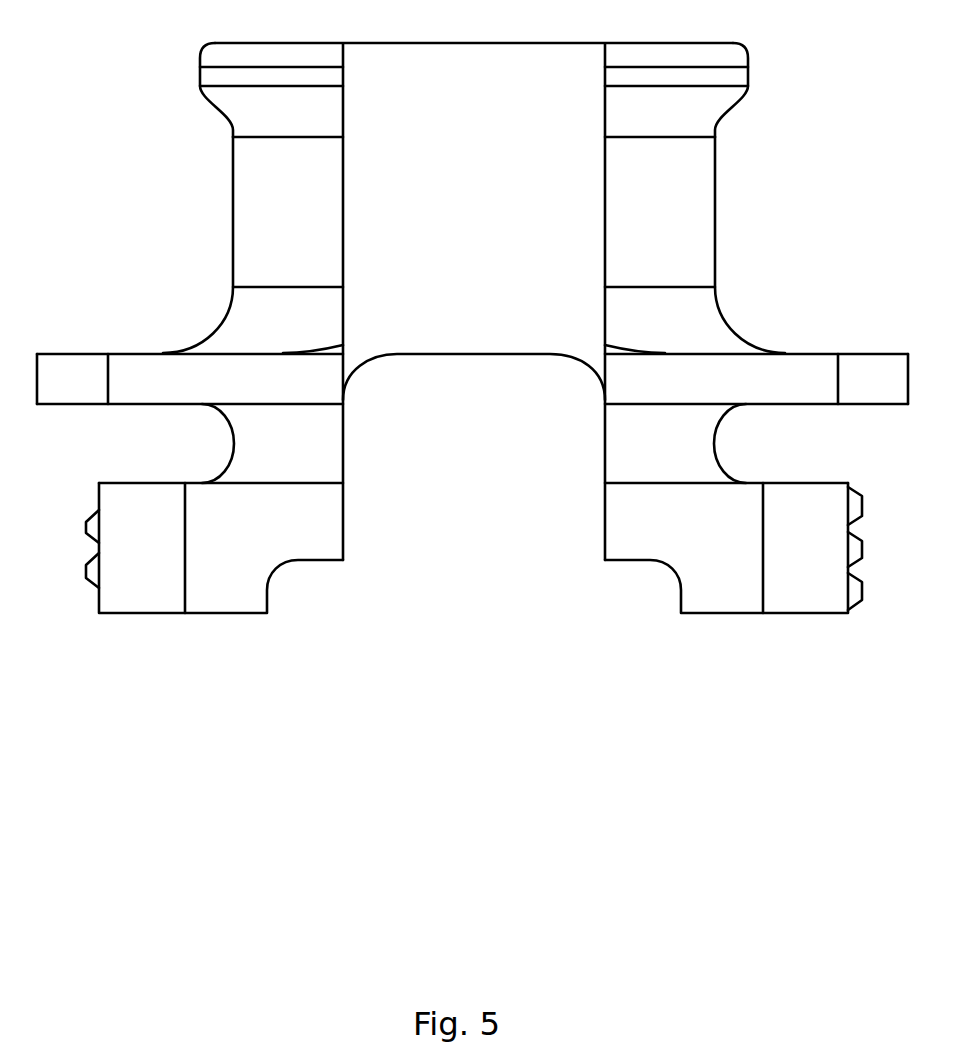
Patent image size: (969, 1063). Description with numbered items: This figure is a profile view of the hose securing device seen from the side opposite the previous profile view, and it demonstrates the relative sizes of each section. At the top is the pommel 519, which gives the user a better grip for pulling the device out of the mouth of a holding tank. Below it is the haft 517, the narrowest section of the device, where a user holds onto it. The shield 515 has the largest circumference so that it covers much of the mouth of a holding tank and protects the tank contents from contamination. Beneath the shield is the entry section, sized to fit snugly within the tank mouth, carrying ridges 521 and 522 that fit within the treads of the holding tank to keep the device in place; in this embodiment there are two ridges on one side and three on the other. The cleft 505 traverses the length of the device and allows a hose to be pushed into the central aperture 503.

The central aperture 503 is at (474, 301).
The cleft 505 is at (375, 555).
The shield 515 is at (893, 355).
The haft 517 is at (233, 205).
The pommel 519 is at (210, 60).
The ridge 521 is at (862, 505).
The ridge 522 is at (86, 521).